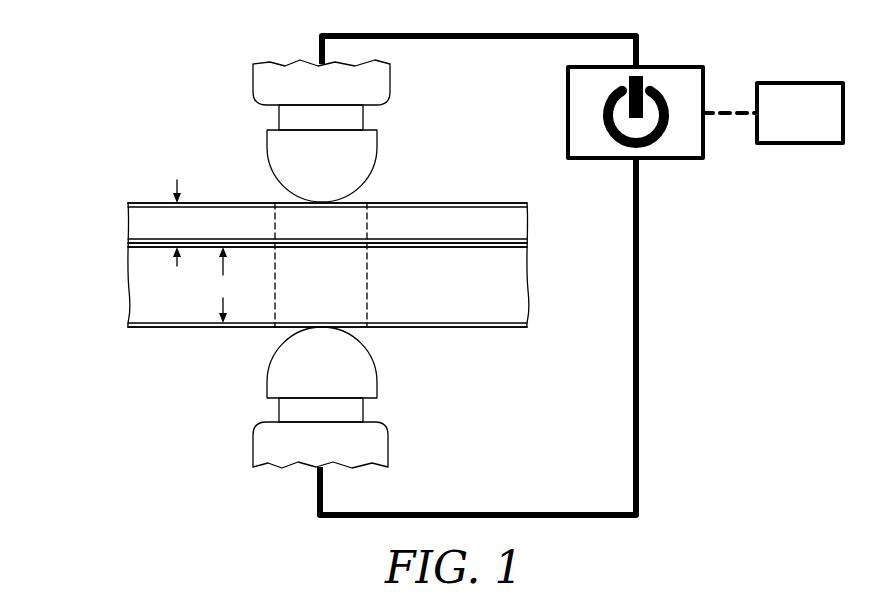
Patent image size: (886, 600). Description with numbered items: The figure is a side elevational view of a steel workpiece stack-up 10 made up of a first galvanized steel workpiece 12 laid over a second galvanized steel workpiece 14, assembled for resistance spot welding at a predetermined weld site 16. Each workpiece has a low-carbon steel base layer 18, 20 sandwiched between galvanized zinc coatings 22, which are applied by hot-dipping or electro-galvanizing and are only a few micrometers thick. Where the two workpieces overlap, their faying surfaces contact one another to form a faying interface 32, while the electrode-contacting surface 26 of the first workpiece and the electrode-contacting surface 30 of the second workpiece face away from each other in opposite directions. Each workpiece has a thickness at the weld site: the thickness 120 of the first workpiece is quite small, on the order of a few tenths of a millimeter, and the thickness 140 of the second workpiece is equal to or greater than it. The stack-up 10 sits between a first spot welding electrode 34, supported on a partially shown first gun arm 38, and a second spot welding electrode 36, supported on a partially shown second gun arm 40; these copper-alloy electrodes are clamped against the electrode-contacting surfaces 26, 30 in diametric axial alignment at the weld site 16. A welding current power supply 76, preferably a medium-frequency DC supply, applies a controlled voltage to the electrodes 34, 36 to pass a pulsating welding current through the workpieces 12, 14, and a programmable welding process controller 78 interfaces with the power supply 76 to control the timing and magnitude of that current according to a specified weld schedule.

The steel workpiece stack-up 10 is at (84, 240).
The first galvanized steel workpiece 12 is at (144, 223).
The second galvanized steel workpiece 14 is at (146, 285).
The weld site 16 is at (275, 225).
The steel base layer of first workpiece 18 is at (515, 223).
The steel base layer of second workpiece 20 is at (515, 282).
The galvanized zinc coating 22 is at (527, 204).
The electrode-contacting surface of first workpiece 26 is at (496, 203).
The electrode-contacting surface of second workpiece 30 is at (423, 328).
The faying interface 32 is at (411, 238).
The first spot welding electrode 34 is at (333, 180).
The second spot welding electrode 36 is at (333, 378).
The first gun arm 38 is at (270, 85).
The second gun arm 40 is at (268, 447).
The welding current power supply 76 is at (673, 83).
The welding process controller 78 is at (792, 95).
The thickness of first galvanized steel workpiece 120 is at (193, 233).
The thickness of second galvanized steel workpiece 140 is at (237, 298).